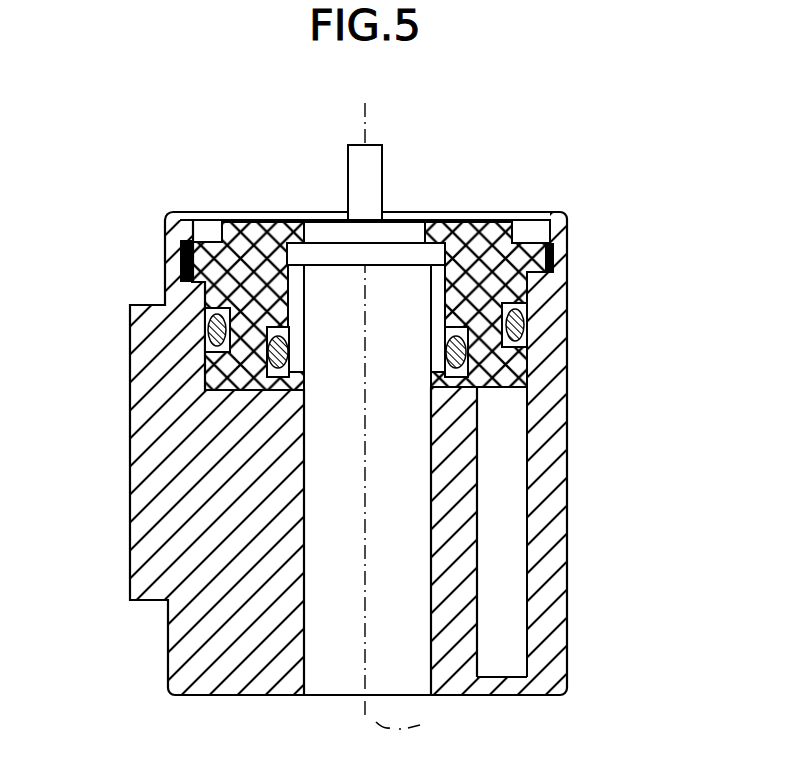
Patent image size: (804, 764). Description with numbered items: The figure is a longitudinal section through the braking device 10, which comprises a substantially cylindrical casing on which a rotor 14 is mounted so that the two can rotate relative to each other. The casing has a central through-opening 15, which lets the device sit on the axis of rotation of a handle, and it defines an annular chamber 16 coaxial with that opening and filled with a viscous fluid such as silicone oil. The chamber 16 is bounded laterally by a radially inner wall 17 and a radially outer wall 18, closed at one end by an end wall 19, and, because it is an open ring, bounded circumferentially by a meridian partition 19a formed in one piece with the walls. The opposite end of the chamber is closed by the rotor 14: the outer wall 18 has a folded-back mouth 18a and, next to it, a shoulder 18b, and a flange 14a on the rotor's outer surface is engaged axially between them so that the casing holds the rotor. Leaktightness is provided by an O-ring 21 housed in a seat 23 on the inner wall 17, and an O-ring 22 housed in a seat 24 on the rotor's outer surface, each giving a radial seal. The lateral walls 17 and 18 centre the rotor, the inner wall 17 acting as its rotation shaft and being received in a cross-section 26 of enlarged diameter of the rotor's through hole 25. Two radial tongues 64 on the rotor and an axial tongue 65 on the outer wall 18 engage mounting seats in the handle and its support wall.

The device 10 is at (152, 156).
The rotor 14 is at (533, 368).
The flange 14a is at (552, 262).
The central through-opening 15 is at (305, 663).
The annular chamber 16 is at (517, 515).
The radially inner wall 17 is at (450, 528).
The radially outer wall 18 is at (548, 521).
The mouth 18a is at (522, 218).
The shoulder 18b is at (184, 262).
The end wall 19 is at (500, 688).
The meridian partition 19a is at (233, 622).
The O-ring 21 is at (293, 352).
The O-ring 22 is at (203, 333).
The seat 23 is at (303, 340).
The seat 24 is at (208, 318).
The through hole 25 is at (308, 234).
The cross-section of enlarged diameter 26 is at (437, 254).
The tongues 64 is at (375, 141).
The tongue 65 is at (128, 512).